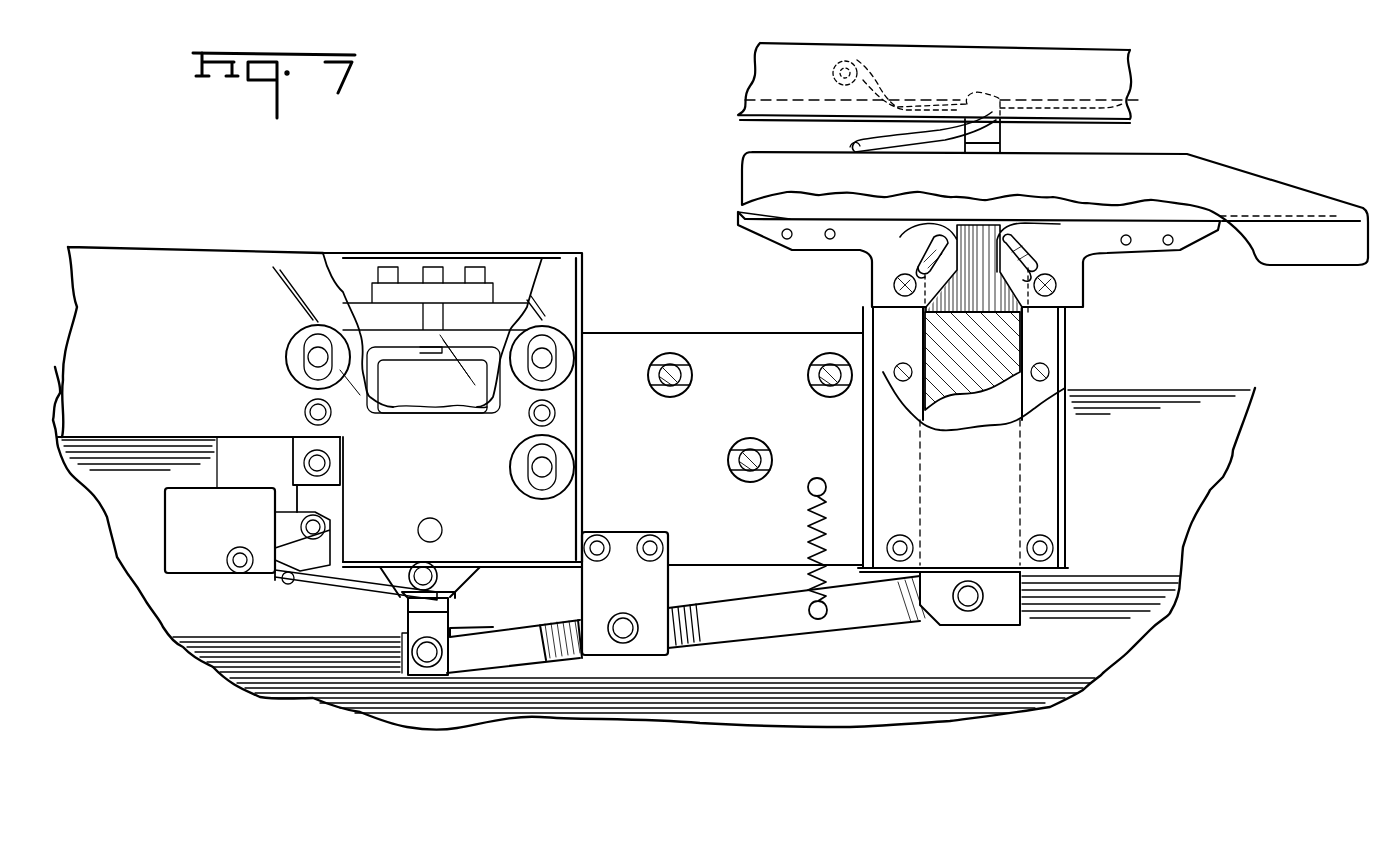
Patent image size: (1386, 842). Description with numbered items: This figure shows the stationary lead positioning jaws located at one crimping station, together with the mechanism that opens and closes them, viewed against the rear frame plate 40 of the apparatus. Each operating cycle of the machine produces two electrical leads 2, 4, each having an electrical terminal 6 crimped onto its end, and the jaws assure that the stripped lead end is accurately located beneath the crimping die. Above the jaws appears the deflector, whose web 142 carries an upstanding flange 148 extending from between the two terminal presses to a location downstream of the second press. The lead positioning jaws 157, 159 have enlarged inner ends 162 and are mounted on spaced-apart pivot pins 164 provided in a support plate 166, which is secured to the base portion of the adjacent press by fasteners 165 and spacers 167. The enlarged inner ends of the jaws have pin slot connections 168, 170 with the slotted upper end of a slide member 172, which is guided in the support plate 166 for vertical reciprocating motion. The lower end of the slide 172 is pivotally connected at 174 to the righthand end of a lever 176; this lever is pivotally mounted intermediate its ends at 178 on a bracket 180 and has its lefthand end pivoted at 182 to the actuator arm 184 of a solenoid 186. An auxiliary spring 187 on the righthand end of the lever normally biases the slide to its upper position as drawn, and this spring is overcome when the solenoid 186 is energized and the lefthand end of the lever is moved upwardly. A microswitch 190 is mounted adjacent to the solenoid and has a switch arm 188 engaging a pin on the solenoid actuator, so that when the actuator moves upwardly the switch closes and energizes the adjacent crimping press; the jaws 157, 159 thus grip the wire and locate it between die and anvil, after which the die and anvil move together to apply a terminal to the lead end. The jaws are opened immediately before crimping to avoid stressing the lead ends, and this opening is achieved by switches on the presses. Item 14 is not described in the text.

The electrical lead 2 is at (907, 100).
The electrical lead 4 is at (893, 137).
The electrical terminal 6 is at (855, 62).
The needle guide 14 is at (1015, 138).
The rear frame plate 40 is at (1180, 475).
The web 142 is at (1145, 101).
The upstanding flange 148 is at (1113, 66).
The lead positioning jaw 157 is at (1150, 248).
The lead positioning jaw 159 is at (815, 238).
The enlarged inner end 162 is at (1013, 278).
The pivot pin 164 is at (893, 286).
The fastener 165 is at (810, 372).
The support plate 166 is at (1058, 343).
The spacer 167 is at (808, 386).
The pin slot connection 168 is at (933, 248).
The pin slot connection 170 is at (925, 272).
The slide member 172 is at (997, 355).
The pivotal connection 174 is at (970, 598).
The lever 176 is at (875, 617).
The pivot 178 is at (623, 635).
The bracket 180 is at (643, 588).
The pivot 182 is at (427, 652).
The actuator arm 184 is at (445, 605).
The solenoid 186 is at (445, 388).
The auxiliary spring 187 is at (810, 522).
The switch arm 188 is at (348, 588).
The microswitch 190 is at (210, 560).